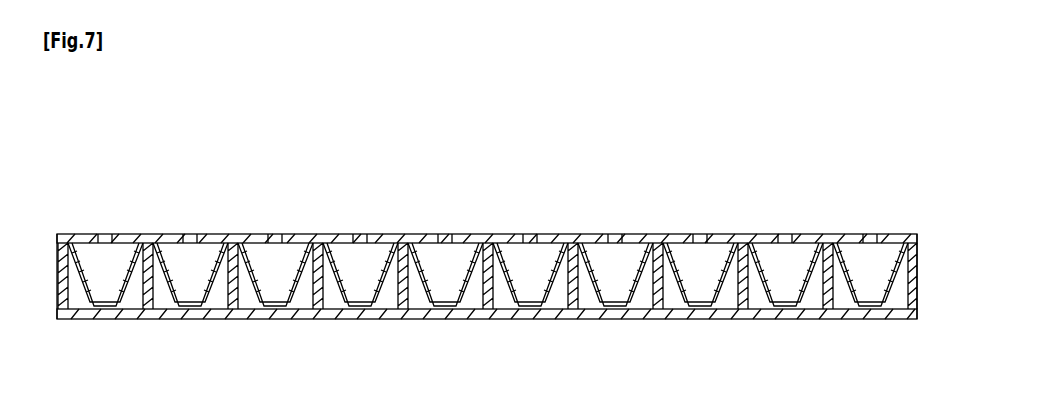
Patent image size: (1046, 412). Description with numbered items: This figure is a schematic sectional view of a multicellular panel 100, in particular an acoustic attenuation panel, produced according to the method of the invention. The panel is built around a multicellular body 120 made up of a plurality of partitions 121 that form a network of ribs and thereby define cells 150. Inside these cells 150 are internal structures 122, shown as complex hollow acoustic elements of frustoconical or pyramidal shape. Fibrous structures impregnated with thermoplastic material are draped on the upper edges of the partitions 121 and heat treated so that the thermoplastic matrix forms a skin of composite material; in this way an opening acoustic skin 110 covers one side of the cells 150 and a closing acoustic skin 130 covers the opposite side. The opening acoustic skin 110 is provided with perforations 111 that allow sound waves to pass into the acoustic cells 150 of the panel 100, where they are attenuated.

The multicellular panel 100 is at (508, 232).
The skin 110 is at (487, 201).
The perforations 111 is at (278, 234).
The multicellular body 120 is at (508, 272).
The partitions 121 is at (735, 291).
The internal structures 122 is at (723, 270).
The skin 130 is at (348, 319).
The cells 150 is at (530, 268).